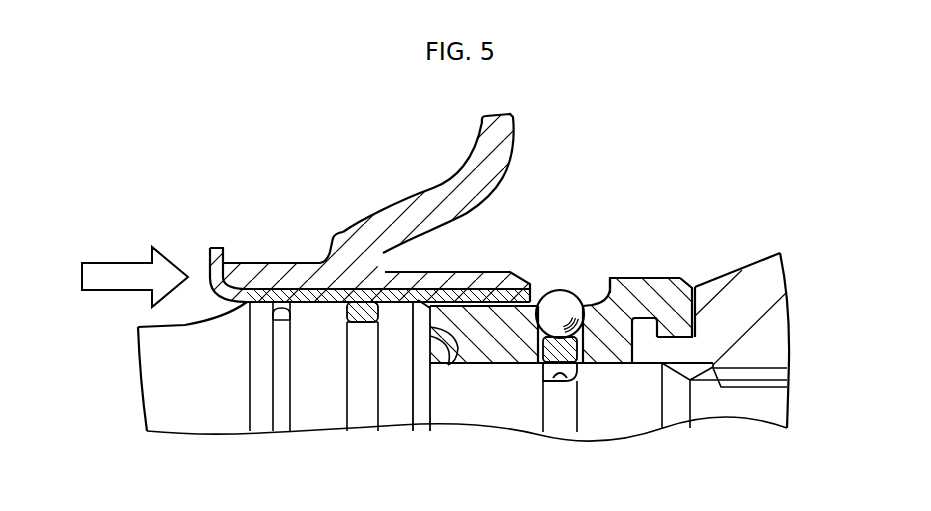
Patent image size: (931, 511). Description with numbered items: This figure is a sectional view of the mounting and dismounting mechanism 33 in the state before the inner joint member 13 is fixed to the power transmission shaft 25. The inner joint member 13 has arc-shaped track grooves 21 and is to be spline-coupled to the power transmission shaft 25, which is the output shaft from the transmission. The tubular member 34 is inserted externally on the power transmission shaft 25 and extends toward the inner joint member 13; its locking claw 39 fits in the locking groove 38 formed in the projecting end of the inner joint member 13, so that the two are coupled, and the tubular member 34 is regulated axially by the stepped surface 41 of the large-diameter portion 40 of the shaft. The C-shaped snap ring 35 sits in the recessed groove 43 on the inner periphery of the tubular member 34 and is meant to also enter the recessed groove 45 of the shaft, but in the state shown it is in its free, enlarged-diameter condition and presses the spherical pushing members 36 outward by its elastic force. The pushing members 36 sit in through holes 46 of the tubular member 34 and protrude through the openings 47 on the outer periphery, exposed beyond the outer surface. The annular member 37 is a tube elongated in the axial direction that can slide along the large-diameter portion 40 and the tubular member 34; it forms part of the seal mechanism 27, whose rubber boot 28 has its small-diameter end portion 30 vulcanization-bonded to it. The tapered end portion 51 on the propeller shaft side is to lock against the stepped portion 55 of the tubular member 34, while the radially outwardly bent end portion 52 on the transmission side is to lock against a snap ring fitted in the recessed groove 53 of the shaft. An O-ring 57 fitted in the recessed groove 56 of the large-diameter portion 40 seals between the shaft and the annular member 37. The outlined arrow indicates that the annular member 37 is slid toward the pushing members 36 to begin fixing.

The inner joint member 13 is at (760, 252).
The arc-shaped track groove 21 is at (727, 270).
The power transmission shaft 25 is at (138, 350).
The seal mechanism 27 is at (529, 133).
The boot 28 is at (487, 163).
The small-diameter end portion 30 is at (272, 263).
The mounting and dismounting mechanism 33 is at (538, 221).
The tubular member 34 is at (650, 276).
The snap ring 35 is at (543, 343).
The pushing member 36 is at (570, 294).
The annular member 37 is at (417, 289).
The locking groove 38 is at (695, 337).
The locking claw 39 is at (680, 317).
The large-diameter portion 40 is at (313, 327).
The stepped surface 41 is at (457, 357).
The recessed groove 43 is at (546, 350).
The recessed groove 45 is at (563, 380).
The through hole 46 is at (578, 368).
The opening 47 is at (550, 292).
The end portion 51 is at (513, 270).
The end portion 52 is at (216, 247).
The recessed groove 53 is at (283, 308).
The stepped portion 55 is at (603, 278).
The recessed groove 56 is at (380, 318).
The O-ring 57 is at (347, 322).